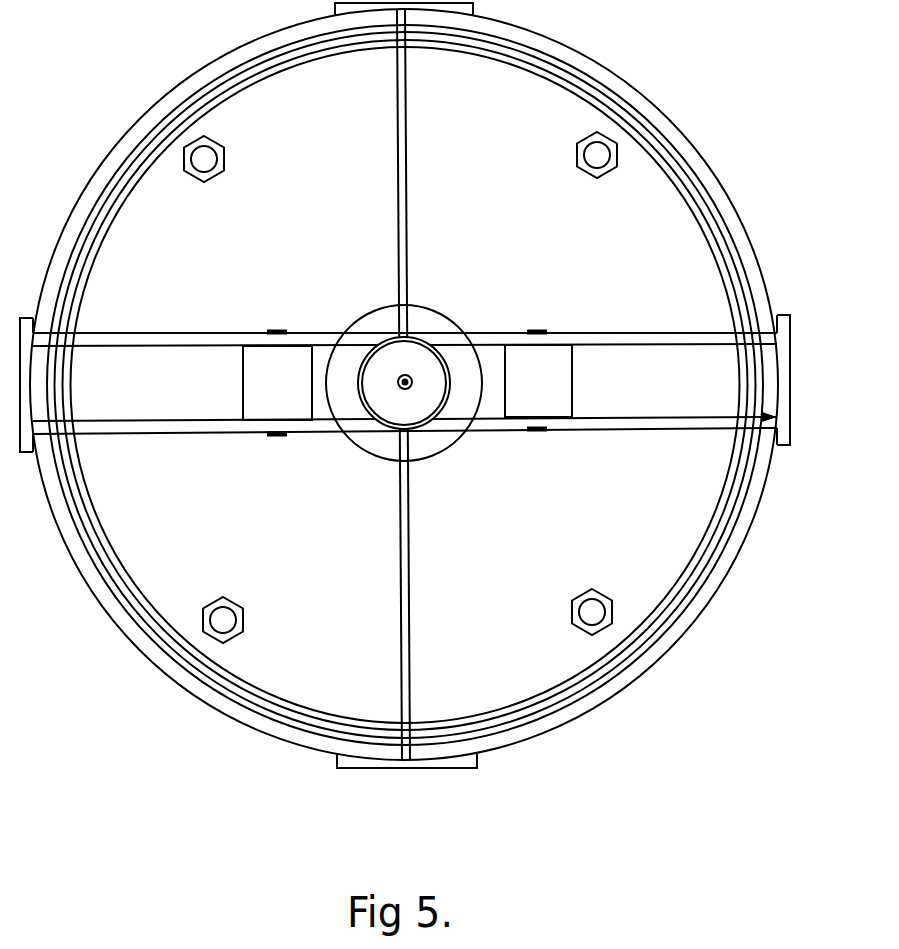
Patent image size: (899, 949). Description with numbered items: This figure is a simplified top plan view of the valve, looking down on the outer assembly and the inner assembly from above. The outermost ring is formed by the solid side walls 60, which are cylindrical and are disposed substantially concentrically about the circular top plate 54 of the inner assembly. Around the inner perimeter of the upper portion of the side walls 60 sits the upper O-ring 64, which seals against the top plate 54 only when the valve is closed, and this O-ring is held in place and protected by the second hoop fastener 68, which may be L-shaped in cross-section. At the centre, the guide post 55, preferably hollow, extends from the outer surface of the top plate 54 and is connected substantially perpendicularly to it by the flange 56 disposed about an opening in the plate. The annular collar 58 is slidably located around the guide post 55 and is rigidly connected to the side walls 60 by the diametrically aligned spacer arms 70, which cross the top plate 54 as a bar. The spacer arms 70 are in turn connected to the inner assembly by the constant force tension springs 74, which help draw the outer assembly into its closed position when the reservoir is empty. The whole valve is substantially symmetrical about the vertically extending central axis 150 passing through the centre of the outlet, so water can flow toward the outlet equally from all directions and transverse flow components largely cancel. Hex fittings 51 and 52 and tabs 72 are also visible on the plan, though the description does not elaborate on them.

The bolt 51 is at (600, 149).
The nut 52 is at (618, 138).
The top plate 54 is at (283, 262).
The guide post 55 is at (455, 360).
The flange 56 is at (463, 325).
The annular collar 58 is at (350, 438).
The solid side walls 60 is at (165, 85).
The upper O-ring 64 is at (140, 143).
The second hoop fastener 68 is at (125, 182).
The spacer arms 70 is at (637, 434).
The tab 72 is at (787, 312).
The constant force tension springs 74 is at (577, 370).
The central axis 150 is at (406, 374).